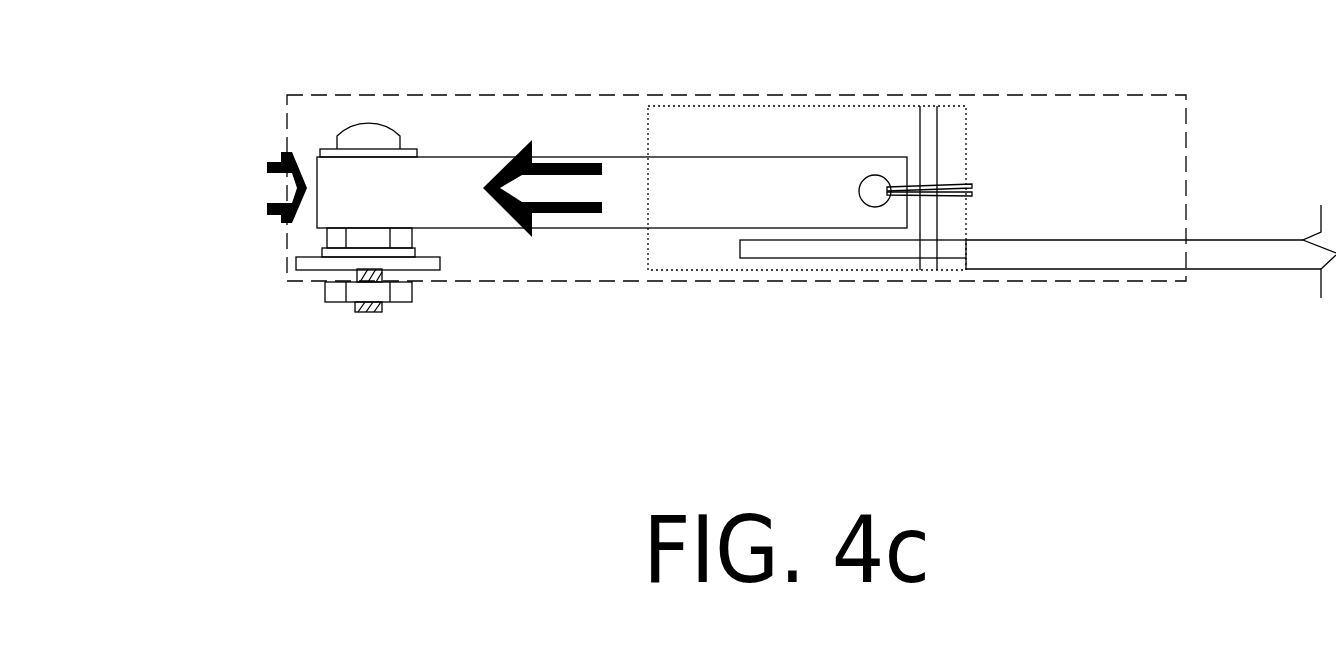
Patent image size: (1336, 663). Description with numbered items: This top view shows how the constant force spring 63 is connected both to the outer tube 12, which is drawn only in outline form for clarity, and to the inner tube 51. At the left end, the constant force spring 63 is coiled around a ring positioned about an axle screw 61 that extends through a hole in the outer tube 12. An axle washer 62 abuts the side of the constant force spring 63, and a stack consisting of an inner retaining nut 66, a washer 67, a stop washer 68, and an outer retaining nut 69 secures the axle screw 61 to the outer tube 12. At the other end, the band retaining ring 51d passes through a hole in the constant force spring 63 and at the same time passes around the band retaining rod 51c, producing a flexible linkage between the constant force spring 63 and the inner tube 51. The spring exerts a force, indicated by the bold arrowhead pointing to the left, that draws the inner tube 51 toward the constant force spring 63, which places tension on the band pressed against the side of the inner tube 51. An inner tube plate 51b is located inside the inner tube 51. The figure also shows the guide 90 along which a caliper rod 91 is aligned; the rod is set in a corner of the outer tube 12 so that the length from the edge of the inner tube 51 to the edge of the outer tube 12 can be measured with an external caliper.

The outer tube 12 is at (776, 153).
The inner tube 51 is at (807, 155).
The inner tube plate 51b is at (871, 293).
The band retaining rod 51c is at (1000, 152).
The band retaining ring 51d is at (981, 174).
The axle screw 61 is at (426, 97).
The axle washer 62 is at (300, 115).
The constant force spring 63 is at (612, 137).
The inner retaining nut 66 is at (294, 236).
The washer 67 is at (266, 261).
The stop washer 68 is at (309, 296).
The outer retaining nut 69 is at (419, 321).
The guide 90 is at (1076, 236).
The caliper rod 91 is at (1261, 250).